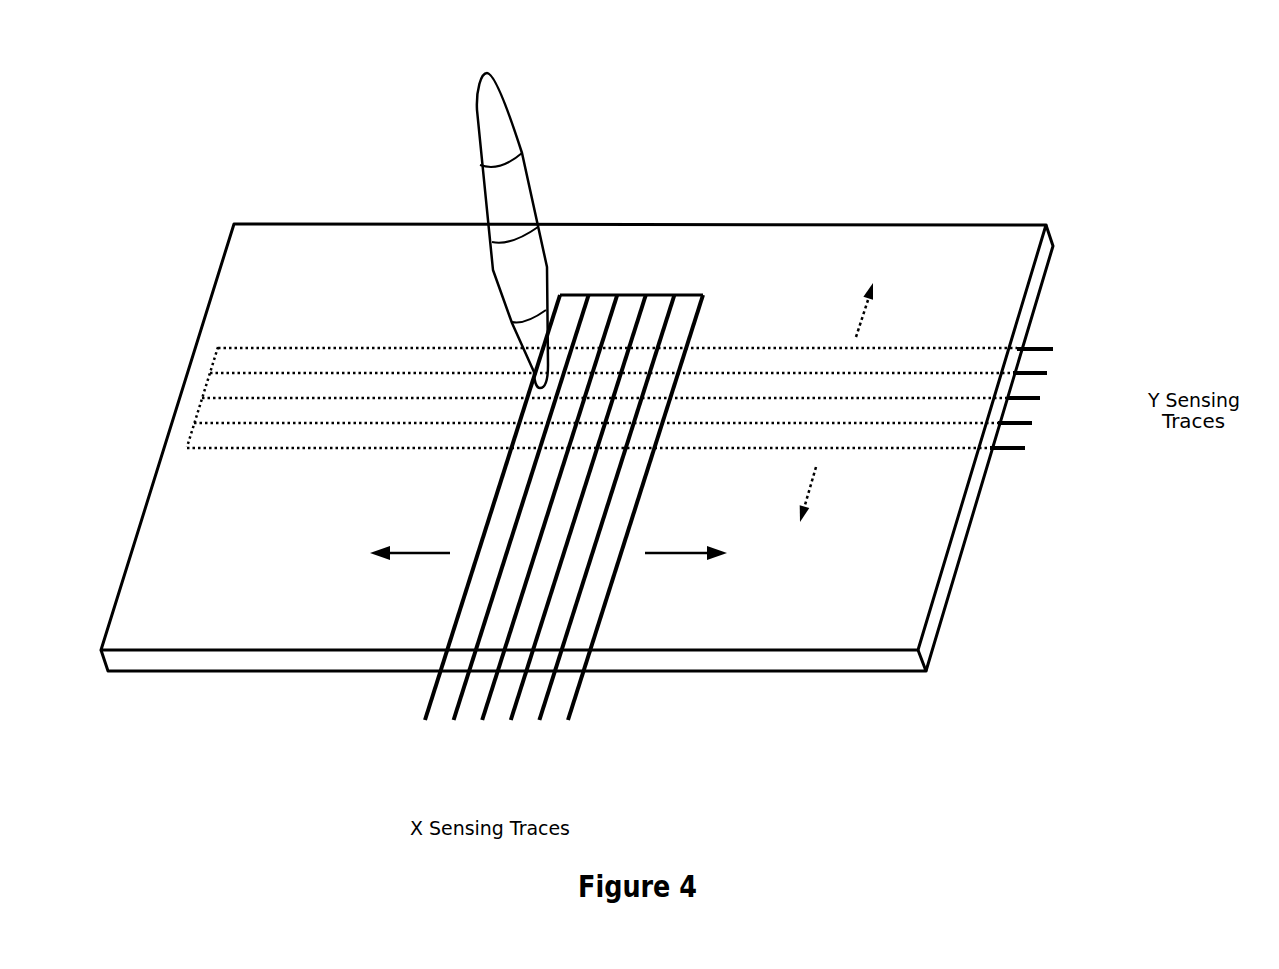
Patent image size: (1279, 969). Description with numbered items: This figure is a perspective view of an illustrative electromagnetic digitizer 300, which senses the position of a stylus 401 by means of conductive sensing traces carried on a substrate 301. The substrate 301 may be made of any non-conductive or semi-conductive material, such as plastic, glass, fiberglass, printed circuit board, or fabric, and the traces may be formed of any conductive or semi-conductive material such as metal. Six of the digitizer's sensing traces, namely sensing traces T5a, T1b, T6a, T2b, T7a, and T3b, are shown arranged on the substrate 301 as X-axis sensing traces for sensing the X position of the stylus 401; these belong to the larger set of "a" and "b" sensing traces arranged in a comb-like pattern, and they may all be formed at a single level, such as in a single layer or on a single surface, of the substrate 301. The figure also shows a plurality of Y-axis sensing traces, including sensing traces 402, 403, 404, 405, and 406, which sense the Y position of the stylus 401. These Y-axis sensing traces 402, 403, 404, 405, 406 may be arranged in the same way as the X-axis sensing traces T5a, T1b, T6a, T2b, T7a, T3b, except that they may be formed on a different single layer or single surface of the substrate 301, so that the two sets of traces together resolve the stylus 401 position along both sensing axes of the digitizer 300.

The electromagnetic digitizer 300 is at (1005, 93).
The substrate 301 is at (833, 224).
The stylus 401 is at (477, 108).
The Y-axis sensing trace 402 is at (1053, 349).
The Y-axis sensing trace 403 is at (1040, 373).
The Y-axis sensing trace 404 is at (1040, 398).
The Y-axis sensing trace 405 is at (1032, 423).
The Y-axis sensing trace 406 is at (1025, 448).
The sensing trace T5a is at (425, 720).
The sensing trace T1b is at (453, 720).
The sensing trace T6a is at (482, 720).
The sensing trace T2b is at (512, 718).
The sensing trace T7a is at (538, 718).
The sensing trace T3b is at (568, 718).